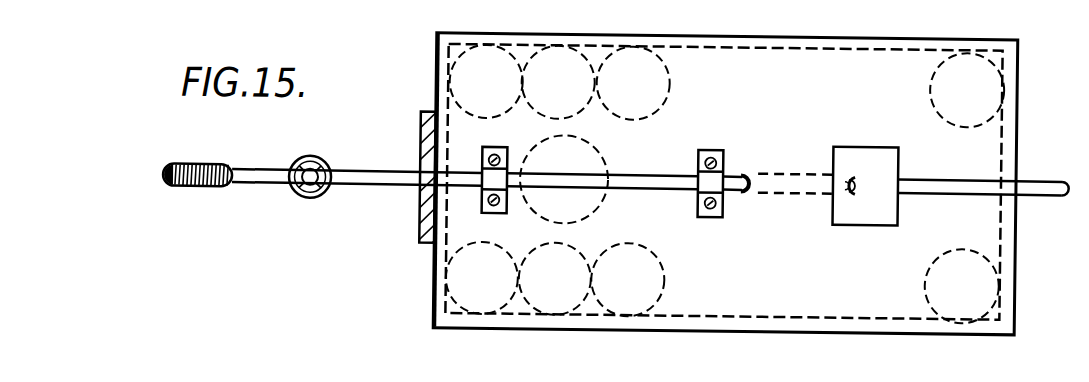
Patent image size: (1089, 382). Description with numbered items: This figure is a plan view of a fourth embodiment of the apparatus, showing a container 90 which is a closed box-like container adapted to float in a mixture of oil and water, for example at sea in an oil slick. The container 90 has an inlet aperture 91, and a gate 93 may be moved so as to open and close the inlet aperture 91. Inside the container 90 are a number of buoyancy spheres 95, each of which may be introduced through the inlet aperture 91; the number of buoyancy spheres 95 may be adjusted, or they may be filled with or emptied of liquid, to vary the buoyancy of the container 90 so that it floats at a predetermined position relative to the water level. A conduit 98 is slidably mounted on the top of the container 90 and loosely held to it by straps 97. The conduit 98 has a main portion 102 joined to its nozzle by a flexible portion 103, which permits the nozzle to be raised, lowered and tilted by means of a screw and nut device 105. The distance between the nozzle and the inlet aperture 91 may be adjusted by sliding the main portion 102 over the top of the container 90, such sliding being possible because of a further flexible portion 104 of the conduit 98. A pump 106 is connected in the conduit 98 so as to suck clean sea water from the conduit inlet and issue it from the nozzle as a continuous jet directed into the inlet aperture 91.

The container 90 is at (637, 36).
The inlet aperture 91 is at (423, 146).
The gate 93 is at (423, 121).
The buoyancy spheres 95 is at (537, 54).
The straps 97 is at (492, 149).
The conduit 98 is at (657, 178).
The main portion of the conduit 102 is at (620, 189).
The flexible portion 103 is at (197, 142).
The flexible portion 104 is at (810, 186).
The screw and nut device 105 is at (312, 160).
The pump 106 is at (887, 161).